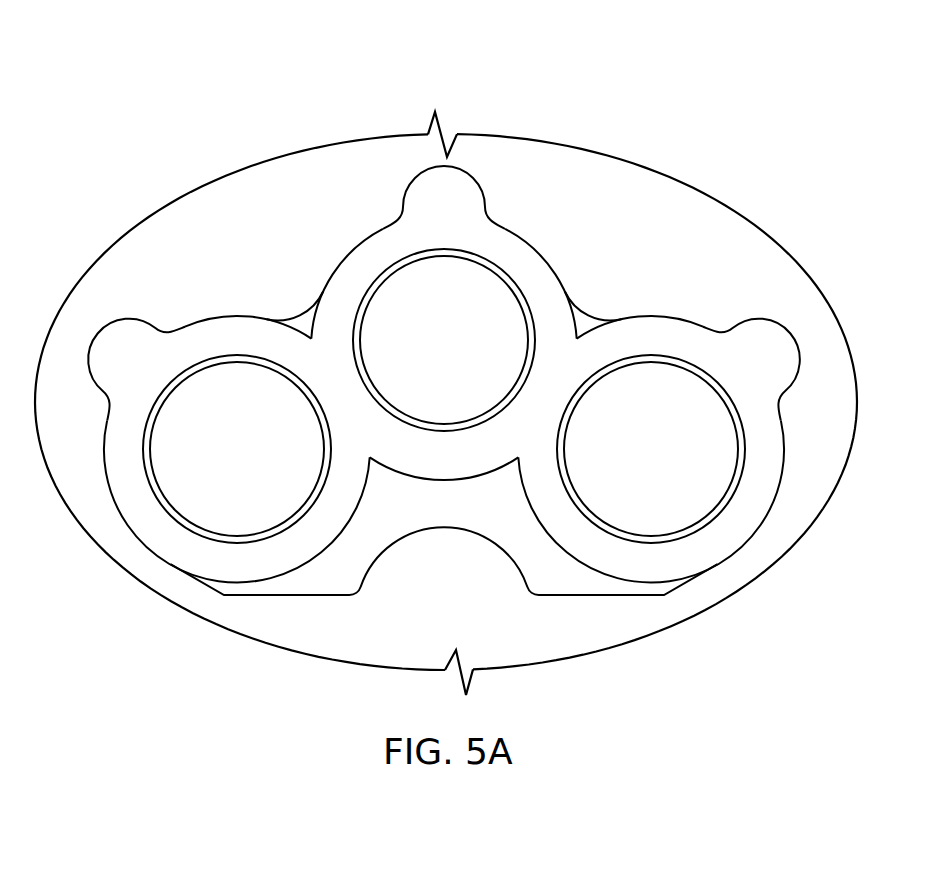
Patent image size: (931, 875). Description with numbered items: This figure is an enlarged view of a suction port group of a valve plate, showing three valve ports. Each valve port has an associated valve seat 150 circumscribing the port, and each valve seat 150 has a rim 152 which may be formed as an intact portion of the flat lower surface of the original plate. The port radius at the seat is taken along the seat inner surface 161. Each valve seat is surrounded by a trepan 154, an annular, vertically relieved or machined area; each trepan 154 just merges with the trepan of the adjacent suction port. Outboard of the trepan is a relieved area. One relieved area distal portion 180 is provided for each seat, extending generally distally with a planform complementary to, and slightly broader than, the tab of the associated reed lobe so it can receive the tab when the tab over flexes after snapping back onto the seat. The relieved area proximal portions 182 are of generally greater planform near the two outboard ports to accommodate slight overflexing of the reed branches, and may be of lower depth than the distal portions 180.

The valve seat 150 is at (660, 343).
The rim 152 is at (672, 358).
The trepan 154 is at (513, 305).
The seat inner surface 161 is at (533, 311).
The relieved area distal portion 180 is at (457, 190).
The relieved area proximal portion 182 is at (552, 554).